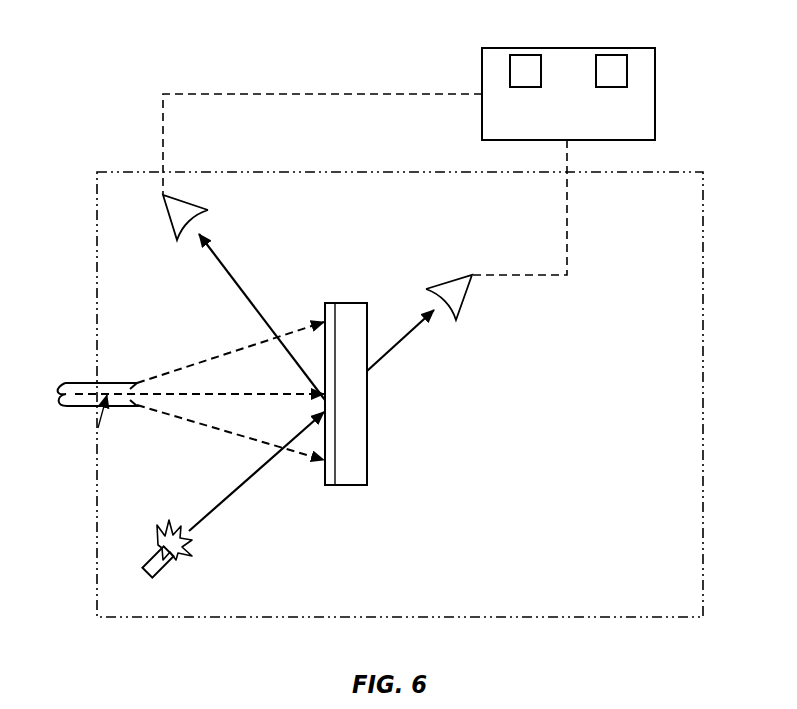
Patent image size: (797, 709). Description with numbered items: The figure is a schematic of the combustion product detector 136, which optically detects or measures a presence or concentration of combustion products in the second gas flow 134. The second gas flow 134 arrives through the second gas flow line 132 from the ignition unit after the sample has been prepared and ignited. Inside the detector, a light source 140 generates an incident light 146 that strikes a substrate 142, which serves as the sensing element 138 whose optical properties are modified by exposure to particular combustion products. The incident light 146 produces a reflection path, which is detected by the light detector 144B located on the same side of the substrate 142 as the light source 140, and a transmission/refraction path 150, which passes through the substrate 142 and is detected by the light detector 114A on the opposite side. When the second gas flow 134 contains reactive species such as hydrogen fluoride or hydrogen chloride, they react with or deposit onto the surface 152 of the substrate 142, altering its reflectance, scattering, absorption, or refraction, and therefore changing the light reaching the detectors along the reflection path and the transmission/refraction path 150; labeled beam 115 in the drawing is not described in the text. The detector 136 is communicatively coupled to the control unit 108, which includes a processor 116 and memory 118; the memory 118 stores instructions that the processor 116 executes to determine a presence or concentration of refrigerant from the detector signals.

The control unit 108 is at (656, 90).
The processor 116 is at (528, 48).
The memory 118 is at (615, 48).
The combustion product detector 136 is at (703, 307).
The light detector 144B is at (190, 205).
The light detector 114A is at (462, 305).
The substrate 142 is at (348, 485).
The transmission/refraction path 150 is at (325, 316).
The surface of the substrate 152 is at (330, 480).
The sensing element 138 is at (232, 282).
The incident light 146 is at (245, 482).
The transmitted light beam 115 is at (400, 340).
The second gas flow line 132 is at (78, 382).
The second gas flow 134 is at (98, 428).
The light source 140 is at (160, 558).